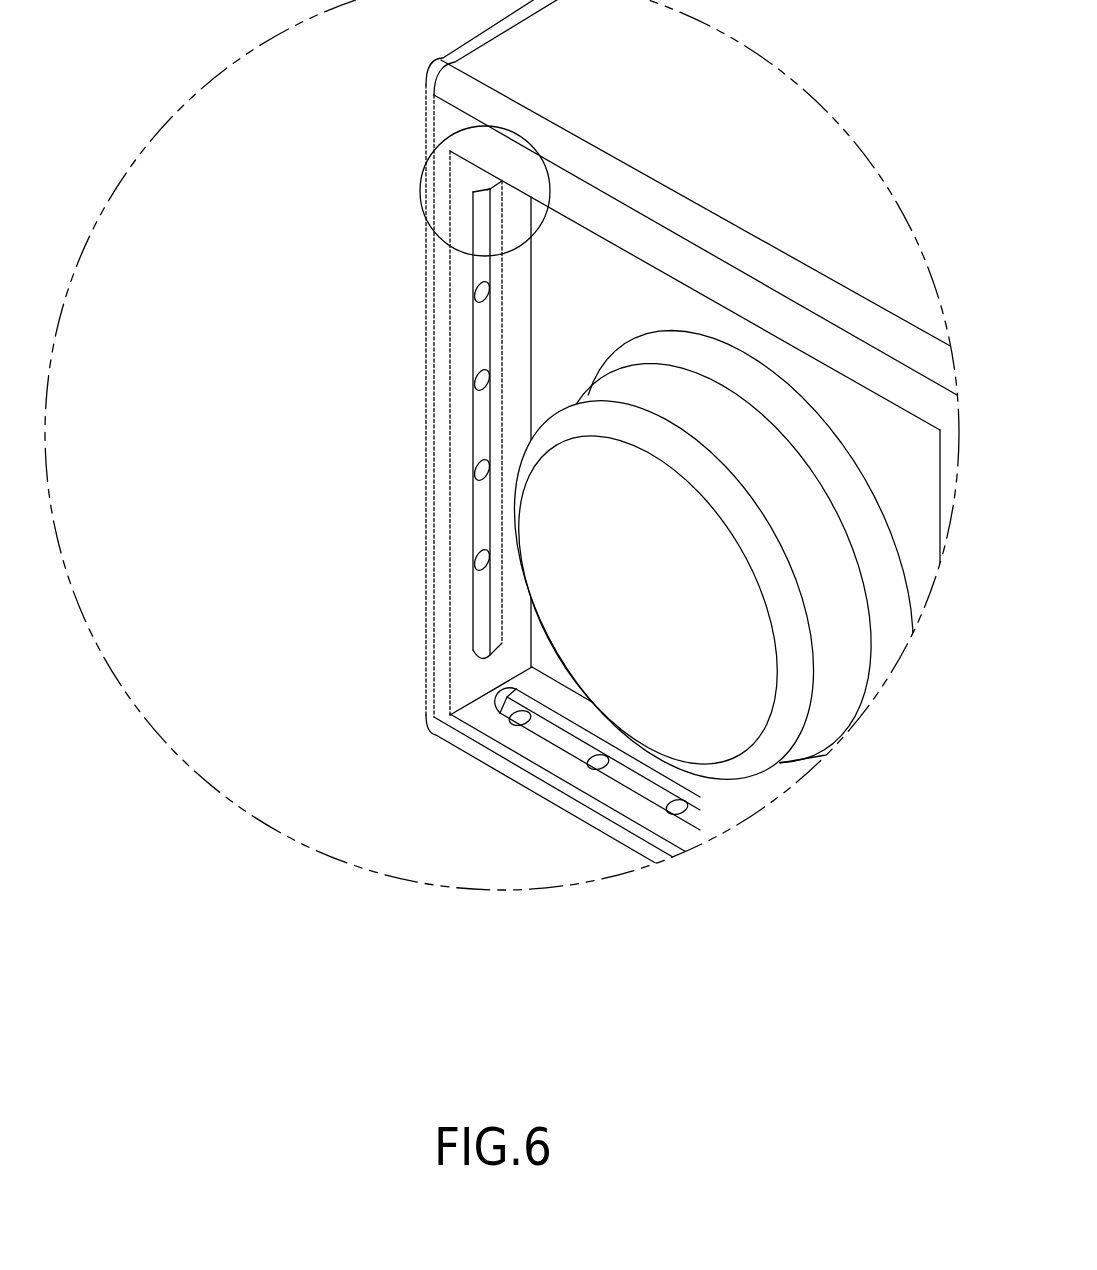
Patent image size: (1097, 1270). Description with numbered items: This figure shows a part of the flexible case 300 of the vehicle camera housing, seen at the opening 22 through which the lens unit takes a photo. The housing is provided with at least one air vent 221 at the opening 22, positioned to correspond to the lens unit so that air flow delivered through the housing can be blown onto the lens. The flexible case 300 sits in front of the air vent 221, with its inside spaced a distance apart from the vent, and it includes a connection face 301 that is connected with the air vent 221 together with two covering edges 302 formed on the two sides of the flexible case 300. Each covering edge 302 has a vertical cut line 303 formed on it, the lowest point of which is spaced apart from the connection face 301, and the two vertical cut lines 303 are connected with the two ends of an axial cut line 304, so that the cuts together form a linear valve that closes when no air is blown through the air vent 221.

The opening 22 is at (461, 442).
The air vent 221 is at (477, 293).
The flexible case 300 is at (477, 505).
The connection face 301 is at (498, 184).
The covering edge 302 is at (476, 194).
The vertical cut line 303 is at (487, 190).
The axial cut line 304 is at (490, 588).